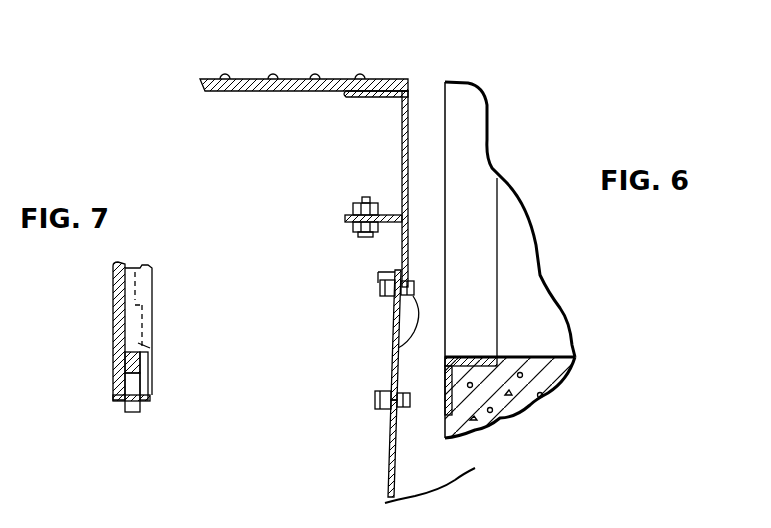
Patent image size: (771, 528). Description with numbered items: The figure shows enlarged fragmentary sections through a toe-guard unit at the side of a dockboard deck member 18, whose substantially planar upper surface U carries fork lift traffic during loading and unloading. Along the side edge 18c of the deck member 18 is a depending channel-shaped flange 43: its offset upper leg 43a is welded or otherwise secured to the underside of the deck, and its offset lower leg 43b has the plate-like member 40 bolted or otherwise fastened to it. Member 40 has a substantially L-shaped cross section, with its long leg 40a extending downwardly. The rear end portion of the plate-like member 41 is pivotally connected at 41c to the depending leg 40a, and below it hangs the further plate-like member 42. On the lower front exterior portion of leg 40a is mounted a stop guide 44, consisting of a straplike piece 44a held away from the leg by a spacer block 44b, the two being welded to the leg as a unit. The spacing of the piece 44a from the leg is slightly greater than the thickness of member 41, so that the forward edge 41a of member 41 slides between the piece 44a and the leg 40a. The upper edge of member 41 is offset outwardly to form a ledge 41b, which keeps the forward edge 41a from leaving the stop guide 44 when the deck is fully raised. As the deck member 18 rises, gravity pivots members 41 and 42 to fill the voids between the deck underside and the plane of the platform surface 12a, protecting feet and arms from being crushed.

In FIG. 6, the platform surface 12a is at (510, 263).
In FIG. 6, the deck member 18 is at (290, 76).
In FIG. 6, the side edge 18c is at (395, 79).
In FIG. 6, the upper surface U is at (216, 79).
In FIG. 6, the channel-shaped flange 43 is at (400, 148).
In FIG. 6, the upper leg 43a is at (363, 97).
In FIG. 6, the lower leg 43b is at (347, 216).
In FIG. 6, the plate-like member 40 is at (370, 247).
In FIG. 6, the long leg 40a is at (402, 249).
In FIG. 7, the long leg 40a is at (112, 318).
In FIG. 6, the plate-like member 41 is at (394, 340).
In FIG. 7, the forward edge 41a is at (145, 345).
In FIG. 6, the ledge 41b is at (380, 272).
In FIG. 6, the pivotal connection 41c is at (398, 348).
In FIG. 6, the plate-like member 42 is at (388, 451).
In FIG. 7, the stop guide 44 is at (151, 360).
In FIG. 7, the straplike piece 44a is at (150, 383).
In FIG. 7, the spacer block 44b is at (138, 403).